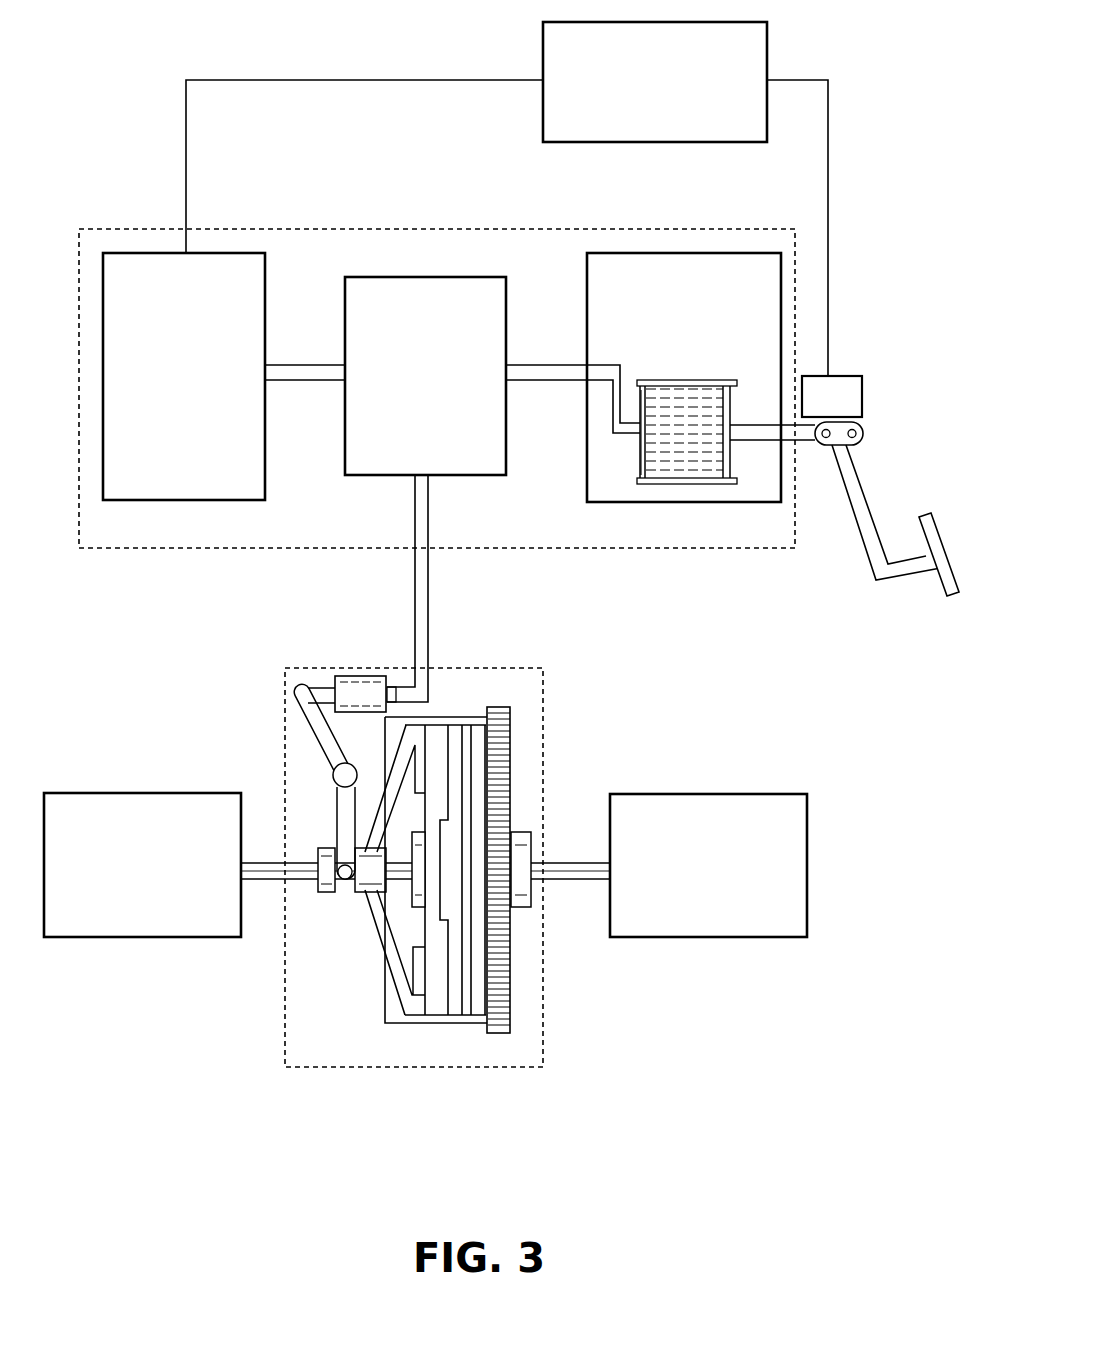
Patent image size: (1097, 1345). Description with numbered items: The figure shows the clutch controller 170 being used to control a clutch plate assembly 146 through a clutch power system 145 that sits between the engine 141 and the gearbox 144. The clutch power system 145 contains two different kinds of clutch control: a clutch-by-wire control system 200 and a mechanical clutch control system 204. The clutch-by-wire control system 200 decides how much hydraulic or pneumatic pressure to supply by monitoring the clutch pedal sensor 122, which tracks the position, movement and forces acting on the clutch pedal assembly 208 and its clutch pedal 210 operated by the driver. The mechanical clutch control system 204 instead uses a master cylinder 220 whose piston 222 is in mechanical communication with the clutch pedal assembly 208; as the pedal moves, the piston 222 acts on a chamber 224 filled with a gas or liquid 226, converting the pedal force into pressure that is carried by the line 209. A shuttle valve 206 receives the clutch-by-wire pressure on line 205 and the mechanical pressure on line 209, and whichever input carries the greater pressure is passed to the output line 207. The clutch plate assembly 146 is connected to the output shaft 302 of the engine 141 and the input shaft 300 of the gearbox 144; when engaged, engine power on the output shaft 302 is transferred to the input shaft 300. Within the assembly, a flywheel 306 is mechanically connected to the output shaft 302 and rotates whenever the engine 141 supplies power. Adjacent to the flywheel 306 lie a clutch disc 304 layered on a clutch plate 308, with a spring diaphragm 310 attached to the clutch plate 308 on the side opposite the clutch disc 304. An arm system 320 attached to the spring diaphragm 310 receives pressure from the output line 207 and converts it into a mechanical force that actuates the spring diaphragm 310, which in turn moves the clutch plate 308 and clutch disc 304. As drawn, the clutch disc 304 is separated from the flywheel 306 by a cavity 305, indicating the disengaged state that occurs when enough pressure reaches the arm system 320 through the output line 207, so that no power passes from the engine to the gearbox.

The clutch controller 170 is at (768, 58).
The clutch power system 145 is at (140, 228).
The clutch-by-wire control system 200 is at (185, 500).
The shuttle valve 206 is at (375, 277).
The line 205 is at (308, 372).
The line 209 is at (562, 372).
The output line 207 is at (415, 582).
The mechanical clutch control system 204 is at (781, 312).
The piston 222 is at (728, 462).
The chamber 224 is at (682, 453).
The gas or liquid 226 is at (657, 468).
The master cylinder 220 is at (628, 467).
The clutch pedal sensor 122 is at (842, 400).
The clutch pedal assembly 208 is at (846, 560).
The clutch pedal 210 is at (939, 548).
The clutch plate assembly 146 is at (543, 703).
The gearbox 144 is at (128, 937).
The engine 141 is at (713, 937).
The input shaft 300 is at (277, 860).
The output shaft 302 is at (563, 880).
The arm system 320 is at (306, 751).
The clutch disc 304 is at (457, 733).
The clutch plate 308 is at (435, 1008).
The spring diaphragm 310 is at (377, 935).
The cavity 305 is at (468, 800).
The flywheel 306 is at (497, 1037).